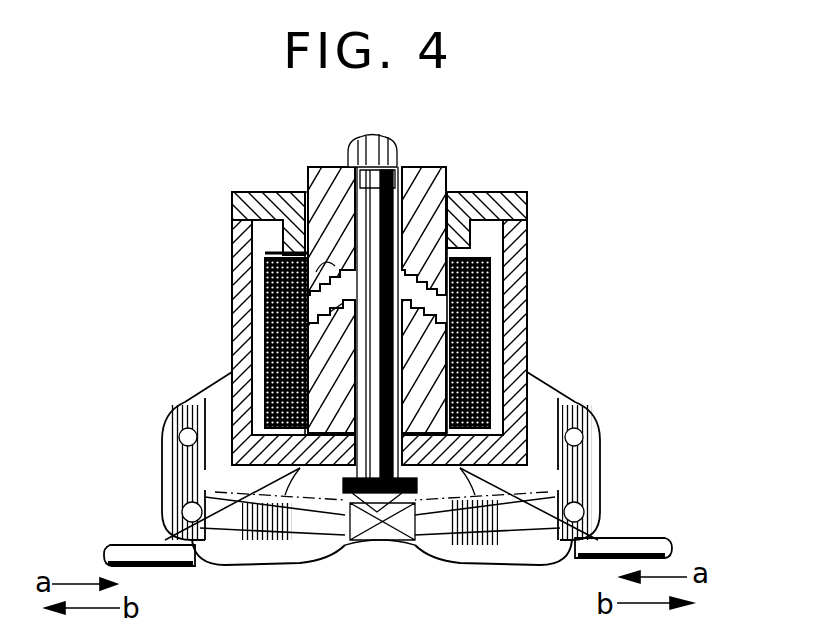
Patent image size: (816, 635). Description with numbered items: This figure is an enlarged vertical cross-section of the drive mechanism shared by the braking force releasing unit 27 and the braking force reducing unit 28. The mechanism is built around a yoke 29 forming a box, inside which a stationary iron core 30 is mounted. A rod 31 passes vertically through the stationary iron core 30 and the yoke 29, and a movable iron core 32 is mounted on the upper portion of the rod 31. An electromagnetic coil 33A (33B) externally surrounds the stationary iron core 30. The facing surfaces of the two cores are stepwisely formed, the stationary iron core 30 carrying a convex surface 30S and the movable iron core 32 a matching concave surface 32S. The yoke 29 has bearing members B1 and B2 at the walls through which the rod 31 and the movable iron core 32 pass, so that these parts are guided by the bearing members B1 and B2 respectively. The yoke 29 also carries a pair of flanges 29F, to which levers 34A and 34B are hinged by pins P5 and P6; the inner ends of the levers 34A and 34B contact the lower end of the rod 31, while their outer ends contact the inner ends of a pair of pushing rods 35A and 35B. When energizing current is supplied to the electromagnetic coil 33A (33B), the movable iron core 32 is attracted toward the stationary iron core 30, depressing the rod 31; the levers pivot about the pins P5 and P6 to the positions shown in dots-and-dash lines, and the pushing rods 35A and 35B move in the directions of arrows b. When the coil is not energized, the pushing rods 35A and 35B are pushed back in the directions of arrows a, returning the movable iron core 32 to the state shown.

The braking force releasing unit 27 is at (444, 328).
The braking force reducing unit 28 is at (444, 328).
The yoke 29 is at (518, 338).
The flange 29F is at (600, 455).
The stationary iron core 30 is at (305, 340).
The convex surface 30S is at (305, 300).
The rod 31 is at (440, 196).
The movable iron core 32 is at (425, 182).
The concave surface 32S is at (316, 264).
The electromagnetic coil 33A is at (265, 340).
The electromagnetic coil 33B is at (290, 376).
The lever 34A is at (508, 540).
The lever 34B is at (302, 540).
The pushing rod 35A is at (655, 540).
The pushing rod 35B is at (125, 550).
The bearing member B1 is at (413, 455).
The bearing member B2 is at (305, 198).
The pin P5 is at (584, 512).
The pin P6 is at (182, 512).